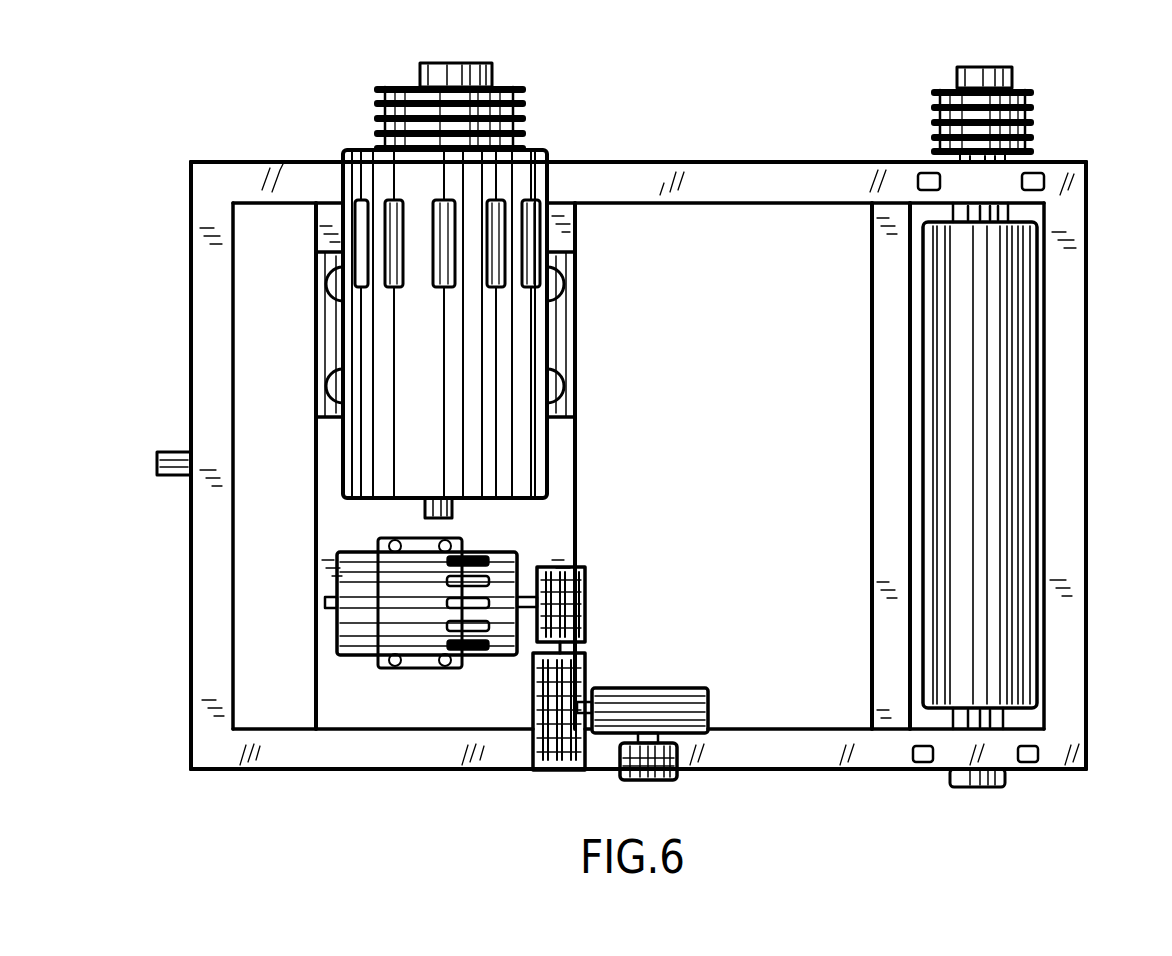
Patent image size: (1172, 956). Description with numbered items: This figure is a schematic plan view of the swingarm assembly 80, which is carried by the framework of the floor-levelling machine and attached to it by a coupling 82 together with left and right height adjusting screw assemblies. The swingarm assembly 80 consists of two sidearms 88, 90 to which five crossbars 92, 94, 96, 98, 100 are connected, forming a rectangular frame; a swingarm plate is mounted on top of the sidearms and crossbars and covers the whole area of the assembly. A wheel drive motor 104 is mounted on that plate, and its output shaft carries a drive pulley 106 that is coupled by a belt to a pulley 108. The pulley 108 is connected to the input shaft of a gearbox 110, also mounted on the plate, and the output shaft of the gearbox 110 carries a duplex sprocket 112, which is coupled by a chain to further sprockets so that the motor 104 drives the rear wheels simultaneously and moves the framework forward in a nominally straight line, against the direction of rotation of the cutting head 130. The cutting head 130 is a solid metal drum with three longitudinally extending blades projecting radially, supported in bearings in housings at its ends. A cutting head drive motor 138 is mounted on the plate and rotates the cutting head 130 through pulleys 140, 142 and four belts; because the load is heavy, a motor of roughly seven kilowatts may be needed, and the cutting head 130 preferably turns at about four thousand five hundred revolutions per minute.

The swingarm assembly 80 is at (702, 88).
The coupling 82 is at (173, 477).
The sidearm 88 is at (818, 729).
The sidearm 90 is at (794, 162).
The crossbar 92 is at (191, 402).
The crossbar 94 is at (316, 532).
The crossbar 96 is at (578, 535).
The crossbar 98 is at (872, 467).
The crossbar 100 is at (1090, 290).
The wheel drive motor 104 is at (500, 655).
The drive pulley 106 is at (585, 592).
The pulley 108 is at (585, 667).
The gearbox 110 is at (663, 687).
The duplex sprocket 112 is at (675, 768).
The cutting head 130 is at (1037, 478).
The cutting head drive motor 138 is at (540, 470).
The pulley 140 is at (490, 75).
The pulley 142 is at (1010, 80).